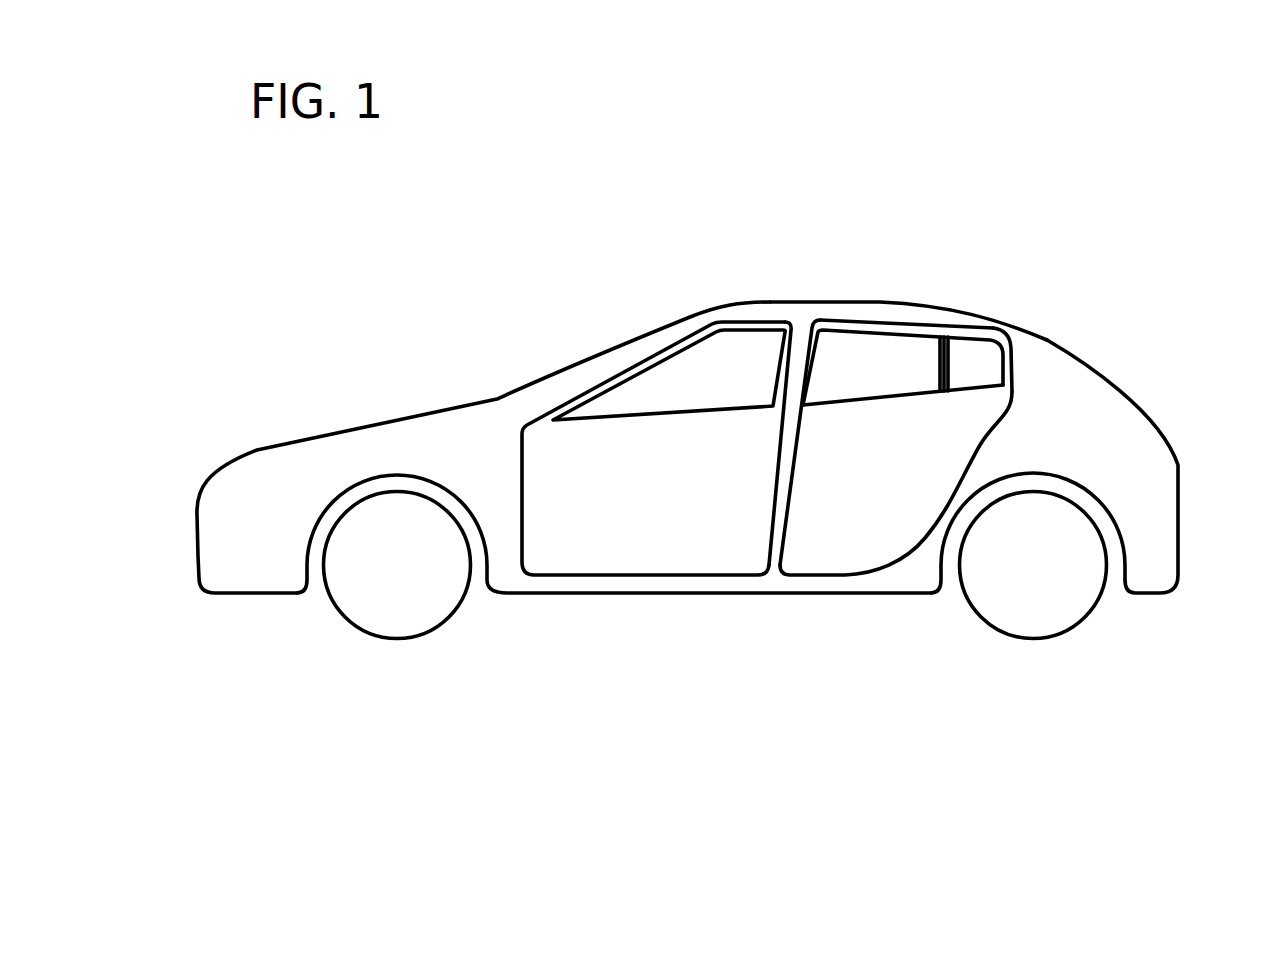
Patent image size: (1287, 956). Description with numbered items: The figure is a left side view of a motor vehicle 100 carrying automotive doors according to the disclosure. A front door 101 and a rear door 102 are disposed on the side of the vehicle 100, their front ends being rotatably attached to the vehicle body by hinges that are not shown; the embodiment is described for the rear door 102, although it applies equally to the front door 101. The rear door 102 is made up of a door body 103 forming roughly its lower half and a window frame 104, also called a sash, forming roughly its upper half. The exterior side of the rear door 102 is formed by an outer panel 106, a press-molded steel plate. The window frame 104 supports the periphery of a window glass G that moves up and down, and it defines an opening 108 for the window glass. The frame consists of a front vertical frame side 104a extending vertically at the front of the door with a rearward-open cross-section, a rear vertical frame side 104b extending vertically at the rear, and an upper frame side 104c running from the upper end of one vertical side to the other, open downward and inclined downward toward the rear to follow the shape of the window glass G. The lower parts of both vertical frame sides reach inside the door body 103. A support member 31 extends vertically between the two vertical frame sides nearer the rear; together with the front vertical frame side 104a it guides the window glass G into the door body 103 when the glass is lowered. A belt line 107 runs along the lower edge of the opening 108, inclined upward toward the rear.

The motor vehicle 100 is at (885, 303).
The front door 101 is at (627, 548).
The rear door 102 is at (830, 548).
The door body 103 is at (885, 535).
The window frame 104 is at (932, 327).
The front vertical frame side 104a is at (795, 368).
The rear vertical frame side 104b is at (1020, 367).
The upper frame side 104c is at (857, 317).
The outer panel 106 is at (1015, 395).
The belt line 107 is at (838, 398).
The opening for the window glass 108 is at (897, 338).
The support member 31 is at (943, 360).
The window glass G is at (835, 350).